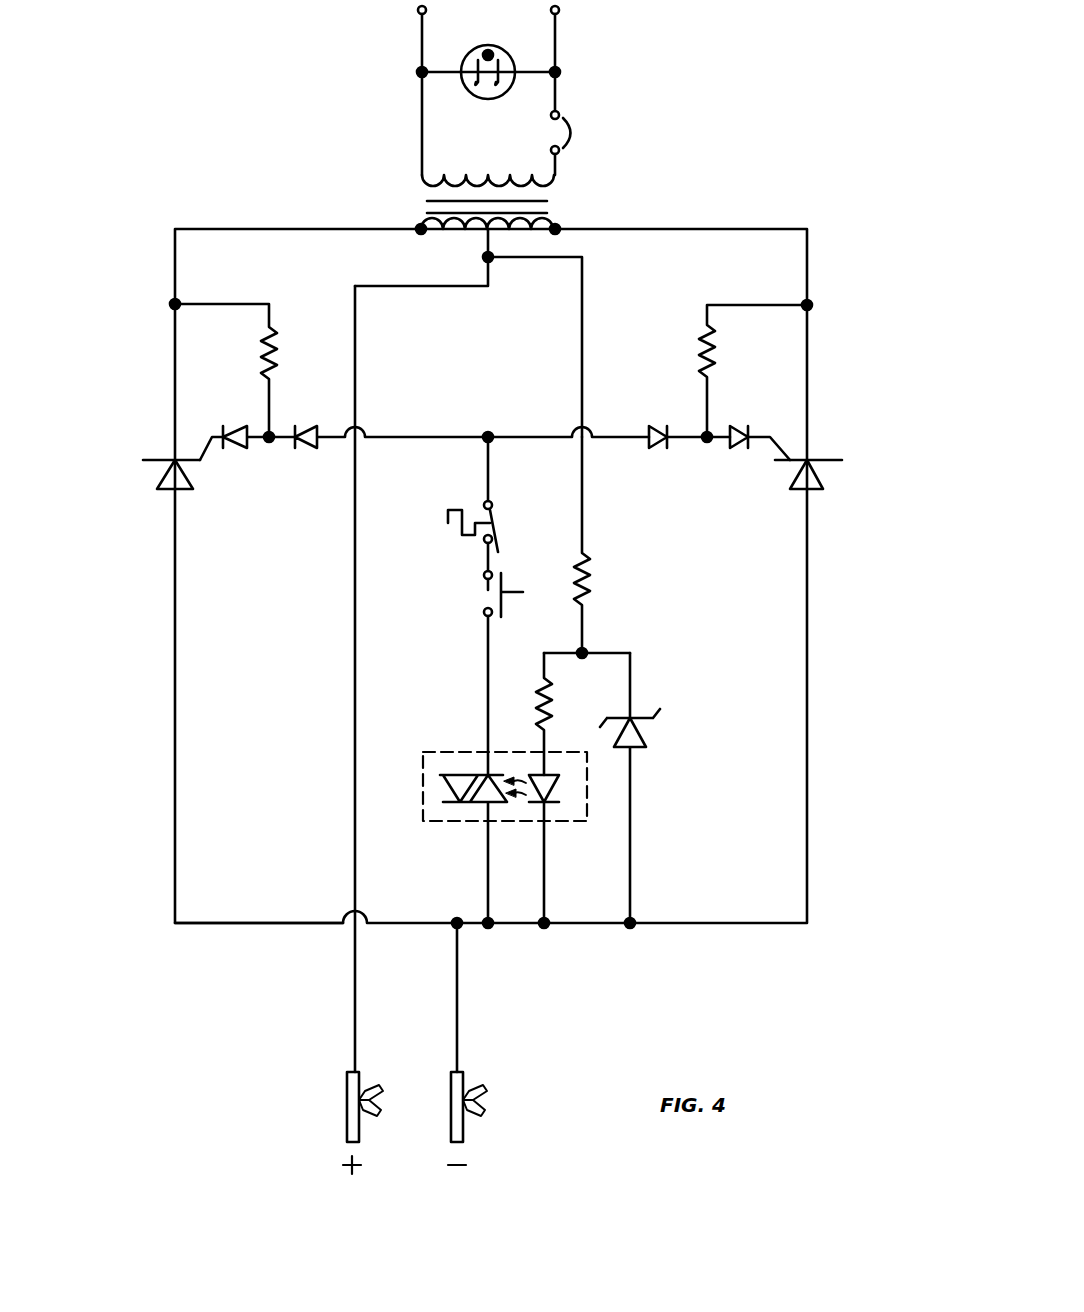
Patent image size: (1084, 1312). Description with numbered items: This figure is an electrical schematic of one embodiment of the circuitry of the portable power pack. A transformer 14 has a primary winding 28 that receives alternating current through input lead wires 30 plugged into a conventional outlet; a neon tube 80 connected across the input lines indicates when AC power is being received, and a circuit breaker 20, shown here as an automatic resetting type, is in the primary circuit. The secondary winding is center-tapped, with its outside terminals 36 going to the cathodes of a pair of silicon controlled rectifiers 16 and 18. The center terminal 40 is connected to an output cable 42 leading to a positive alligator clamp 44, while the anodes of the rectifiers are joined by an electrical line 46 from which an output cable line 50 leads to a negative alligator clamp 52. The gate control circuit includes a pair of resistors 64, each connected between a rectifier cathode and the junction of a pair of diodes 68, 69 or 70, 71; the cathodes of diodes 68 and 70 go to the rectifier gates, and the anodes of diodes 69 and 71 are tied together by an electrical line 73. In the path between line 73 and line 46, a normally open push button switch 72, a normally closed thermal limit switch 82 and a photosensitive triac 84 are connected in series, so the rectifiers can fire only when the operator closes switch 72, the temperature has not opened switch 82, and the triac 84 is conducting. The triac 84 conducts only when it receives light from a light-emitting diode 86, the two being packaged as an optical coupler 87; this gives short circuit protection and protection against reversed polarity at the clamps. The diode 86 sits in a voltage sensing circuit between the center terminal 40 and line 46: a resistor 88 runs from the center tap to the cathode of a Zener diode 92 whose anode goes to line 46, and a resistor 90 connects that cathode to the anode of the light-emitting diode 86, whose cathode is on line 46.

The transformer 14 is at (505, 134).
The silicon controlled rectifier 16 is at (162, 476).
The silicon controlled rectifier 18 is at (822, 480).
The circuit breaker 20 is at (572, 133).
The primary winding 28 is at (488, 180).
The input lead wires 30 is at (422, 30).
The outside terminals 36 is at (421, 229).
The center terminal 40 is at (492, 260).
The output cable 42 is at (353, 681).
The positive alligator clamp 44 is at (347, 1100).
The electrical line 46 is at (257, 925).
The output cable line 50 is at (460, 991).
The negative alligator clamp 52 is at (487, 1100).
The resistors 64 is at (275, 360).
The diode 68 is at (240, 447).
The diode 69 is at (312, 447).
The diode 70 is at (740, 425).
The diode 71 is at (657, 447).
The push button switch 72 is at (482, 590).
The electrical line 73 is at (528, 437).
The neon tube 80 is at (488, 50).
The thermal limit switch 82 is at (495, 528).
The photosensitive triac 84 is at (425, 790).
The light-emitting diode 86 is at (560, 785).
The optical coupler 87 is at (481, 837).
The resistor 88 is at (590, 578).
The resistor 90 is at (552, 702).
The Zener diode 92 is at (645, 735).